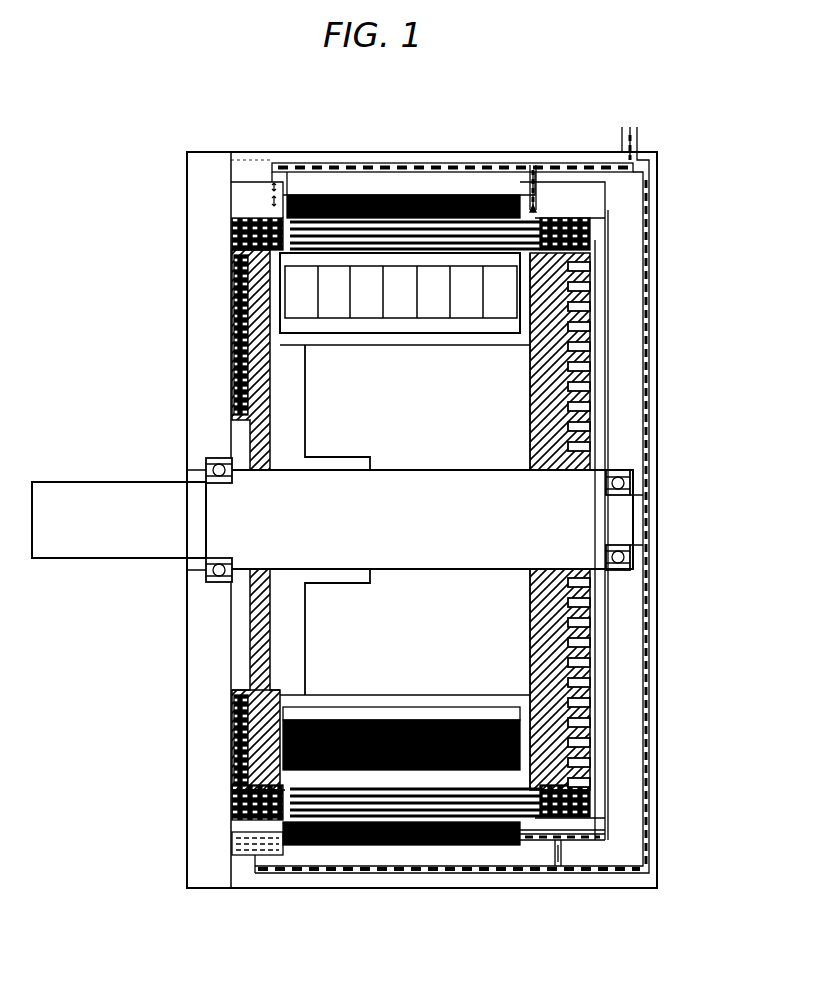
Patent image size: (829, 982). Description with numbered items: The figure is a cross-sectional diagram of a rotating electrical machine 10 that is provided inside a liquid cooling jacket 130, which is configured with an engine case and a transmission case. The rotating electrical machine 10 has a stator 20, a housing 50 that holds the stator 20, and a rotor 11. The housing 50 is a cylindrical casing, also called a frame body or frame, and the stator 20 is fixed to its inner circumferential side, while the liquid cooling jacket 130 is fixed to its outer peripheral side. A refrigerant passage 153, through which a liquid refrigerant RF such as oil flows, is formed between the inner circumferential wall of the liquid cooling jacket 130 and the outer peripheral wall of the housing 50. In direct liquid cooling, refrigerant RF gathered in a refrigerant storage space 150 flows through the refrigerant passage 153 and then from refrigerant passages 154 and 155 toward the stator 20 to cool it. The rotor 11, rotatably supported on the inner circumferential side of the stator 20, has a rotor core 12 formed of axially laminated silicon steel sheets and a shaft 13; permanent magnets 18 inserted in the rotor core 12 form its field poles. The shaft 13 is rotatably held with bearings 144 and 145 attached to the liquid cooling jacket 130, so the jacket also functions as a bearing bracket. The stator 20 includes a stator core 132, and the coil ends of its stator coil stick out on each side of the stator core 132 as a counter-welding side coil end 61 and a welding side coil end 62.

The rotating electrical machine 10 is at (388, 128).
The rotor 11 is at (283, 443).
The rotor core 12 is at (275, 720).
The shaft 13 is at (68, 492).
The permanent magnet 18 is at (298, 290).
The stator 20 is at (235, 770).
The housing 50 is at (540, 205).
The coil end 61 is at (233, 327).
The coil end 62 is at (585, 298).
The liquid cooling jacket 130 is at (632, 890).
The stator core 132 is at (460, 195).
The bearing 144 is at (218, 582).
The bearing 145 is at (630, 565).
The refrigerant storage space 150 is at (245, 845).
The refrigerant passage 153 is at (308, 163).
The refrigerant passage 154 is at (272, 168).
The refrigerant passage 155 is at (533, 200).
The refrigerant RF is at (272, 190).